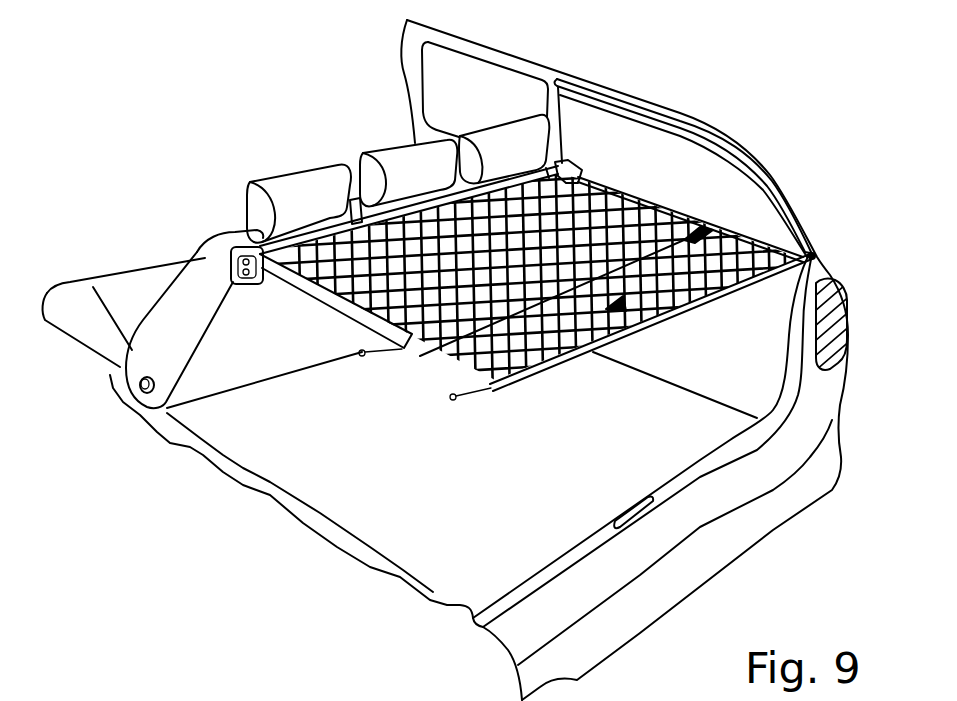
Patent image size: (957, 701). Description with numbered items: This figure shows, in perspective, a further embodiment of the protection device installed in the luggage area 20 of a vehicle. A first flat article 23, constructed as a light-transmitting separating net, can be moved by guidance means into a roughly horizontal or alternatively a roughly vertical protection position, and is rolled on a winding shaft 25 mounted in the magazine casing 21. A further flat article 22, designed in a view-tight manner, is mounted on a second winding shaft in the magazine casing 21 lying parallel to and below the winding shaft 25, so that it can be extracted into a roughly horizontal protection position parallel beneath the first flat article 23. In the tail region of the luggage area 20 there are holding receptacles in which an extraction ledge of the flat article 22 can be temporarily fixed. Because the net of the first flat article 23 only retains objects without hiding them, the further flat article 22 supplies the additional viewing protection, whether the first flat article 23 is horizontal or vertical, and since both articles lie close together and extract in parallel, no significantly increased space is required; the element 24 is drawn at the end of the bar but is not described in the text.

The cargo net arrangement 20 is at (361, 475).
The transverse bar (upper net rod) 21 is at (358, 215).
The side strap / tensioning rod 22 is at (293, 298).
The lower strap / tensioning rod 23 is at (442, 365).
The roller / winding unit 24 is at (240, 288).
The mounting of the bar on the seat back 25 is at (233, 260).